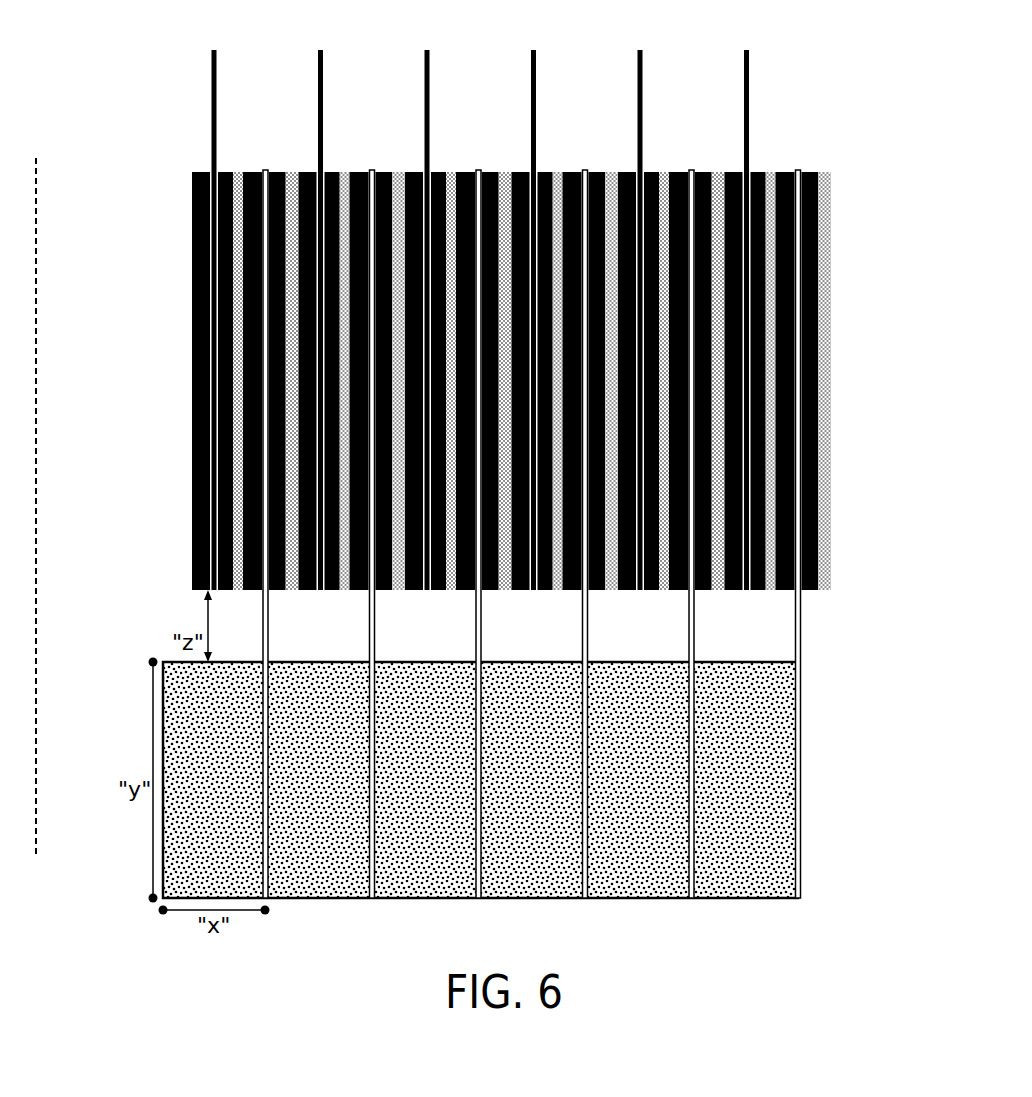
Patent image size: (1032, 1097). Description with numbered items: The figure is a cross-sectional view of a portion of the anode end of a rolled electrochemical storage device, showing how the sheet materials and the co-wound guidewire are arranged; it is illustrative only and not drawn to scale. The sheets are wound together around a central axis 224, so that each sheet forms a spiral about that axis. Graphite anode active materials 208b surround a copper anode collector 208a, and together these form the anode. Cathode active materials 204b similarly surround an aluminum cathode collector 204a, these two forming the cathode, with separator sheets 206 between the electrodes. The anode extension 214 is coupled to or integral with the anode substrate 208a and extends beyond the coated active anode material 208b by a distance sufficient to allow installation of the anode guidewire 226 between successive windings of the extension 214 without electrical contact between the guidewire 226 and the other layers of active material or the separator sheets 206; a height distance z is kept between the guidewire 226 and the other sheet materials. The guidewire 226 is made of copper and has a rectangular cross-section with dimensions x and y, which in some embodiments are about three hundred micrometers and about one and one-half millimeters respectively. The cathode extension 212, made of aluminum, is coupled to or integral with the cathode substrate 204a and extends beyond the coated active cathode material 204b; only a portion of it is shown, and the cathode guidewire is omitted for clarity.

The cathode collector 204a is at (753, 478).
The cathode active materials 204b is at (757, 424).
The separator sheets 206 is at (772, 372).
The anode collector 208a is at (803, 185).
The anode active materials 208b is at (813, 280).
The cathode extension 212 is at (745, 65).
The anode extension 214 is at (803, 700).
The central axis 224 is at (37, 210).
The anode guidewire 226 is at (791, 795).